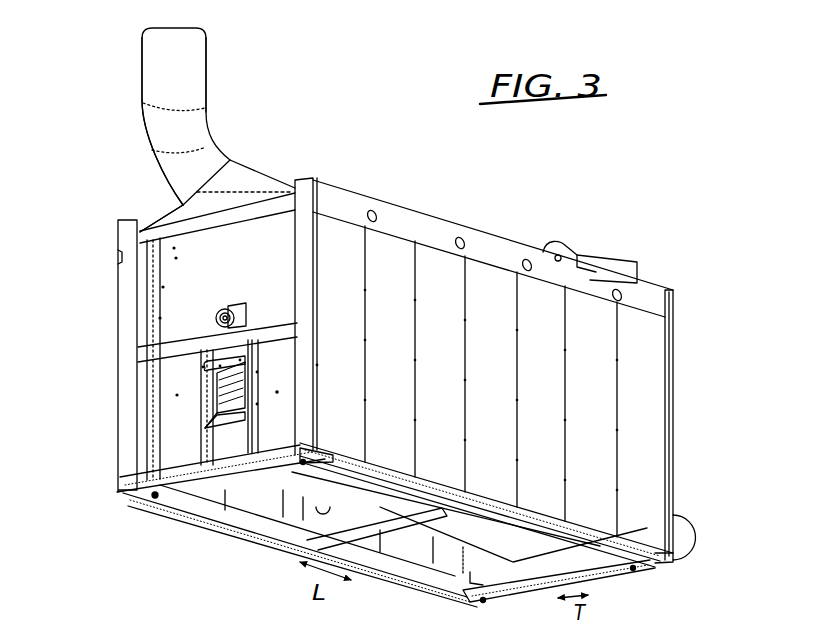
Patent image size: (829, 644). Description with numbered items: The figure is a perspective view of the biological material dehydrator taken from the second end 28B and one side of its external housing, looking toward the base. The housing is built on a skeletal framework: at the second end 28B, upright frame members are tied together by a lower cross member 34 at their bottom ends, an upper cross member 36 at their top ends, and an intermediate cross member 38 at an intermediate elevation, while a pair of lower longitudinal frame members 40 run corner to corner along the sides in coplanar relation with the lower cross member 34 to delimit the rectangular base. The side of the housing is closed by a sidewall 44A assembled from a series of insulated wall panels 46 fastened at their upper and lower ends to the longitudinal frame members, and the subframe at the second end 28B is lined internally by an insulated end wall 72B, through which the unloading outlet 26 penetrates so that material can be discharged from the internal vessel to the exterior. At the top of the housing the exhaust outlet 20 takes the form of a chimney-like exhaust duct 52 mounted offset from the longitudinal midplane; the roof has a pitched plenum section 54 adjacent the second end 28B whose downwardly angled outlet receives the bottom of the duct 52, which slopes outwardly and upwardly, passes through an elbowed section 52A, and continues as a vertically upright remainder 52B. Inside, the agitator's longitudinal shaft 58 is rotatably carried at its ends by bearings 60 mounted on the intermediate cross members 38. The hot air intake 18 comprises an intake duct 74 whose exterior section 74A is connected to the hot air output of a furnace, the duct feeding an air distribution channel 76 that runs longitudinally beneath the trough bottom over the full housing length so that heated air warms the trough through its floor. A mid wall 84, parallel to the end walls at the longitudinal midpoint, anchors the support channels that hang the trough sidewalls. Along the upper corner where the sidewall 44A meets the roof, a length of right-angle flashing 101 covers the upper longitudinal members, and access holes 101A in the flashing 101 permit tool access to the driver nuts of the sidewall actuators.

The hot air intake 18 is at (702, 553).
The exhaust outlet 20 is at (237, 127).
The unloading outlet 26 is at (225, 397).
The second end 28B is at (97, 366).
The lower cross member 34 is at (190, 496).
The upper cross member 36 is at (155, 227).
The intermediate cross member 38 is at (182, 345).
The lower longitudinal frame member 40 is at (523, 523).
The sidewall 44A is at (649, 405).
The insulated wall panel 46 is at (643, 368).
The exhaust duct 52 is at (163, 92).
The elbowed section 52A is at (170, 166).
The vertically upright remainder 52B is at (197, 63).
The pitched plenum section 54 is at (256, 184).
The longitudinal shaft 58 is at (218, 316).
The bearings 60 is at (233, 308).
The insulated end wall 72B is at (185, 268).
The intake duct 74 is at (678, 558).
The exterior section of the intake duct 74A is at (683, 526).
The air distribution channel 76 is at (458, 532).
The mid wall 84 is at (313, 518).
The right-angle flashing 101 is at (425, 222).
The access holes 101A is at (375, 212).